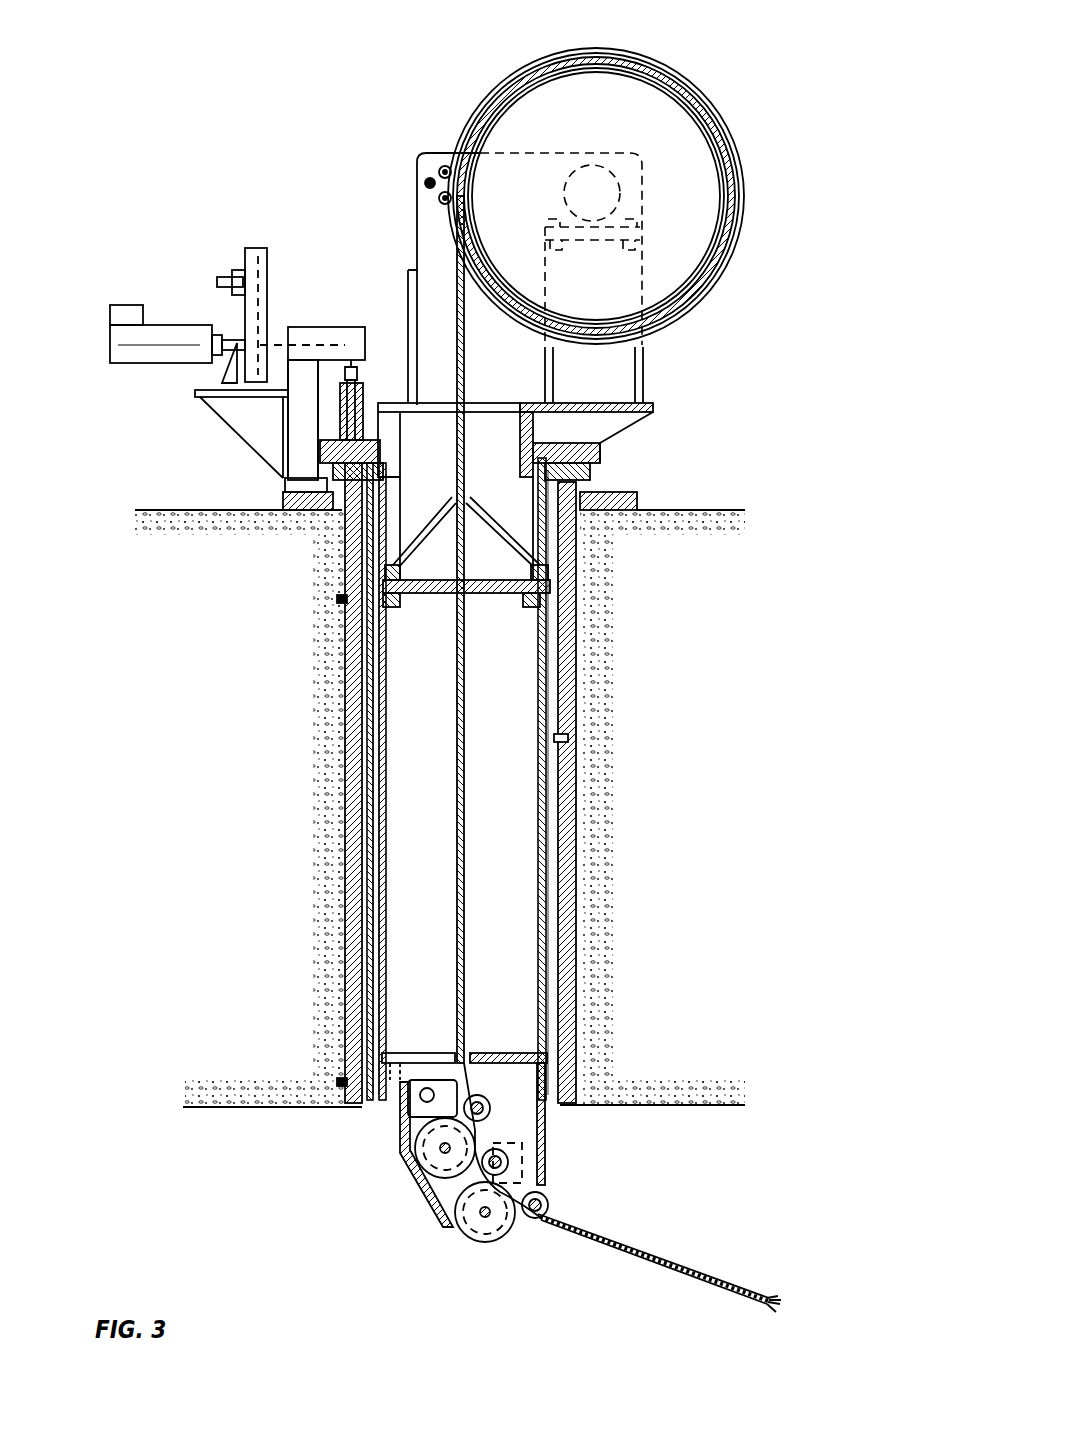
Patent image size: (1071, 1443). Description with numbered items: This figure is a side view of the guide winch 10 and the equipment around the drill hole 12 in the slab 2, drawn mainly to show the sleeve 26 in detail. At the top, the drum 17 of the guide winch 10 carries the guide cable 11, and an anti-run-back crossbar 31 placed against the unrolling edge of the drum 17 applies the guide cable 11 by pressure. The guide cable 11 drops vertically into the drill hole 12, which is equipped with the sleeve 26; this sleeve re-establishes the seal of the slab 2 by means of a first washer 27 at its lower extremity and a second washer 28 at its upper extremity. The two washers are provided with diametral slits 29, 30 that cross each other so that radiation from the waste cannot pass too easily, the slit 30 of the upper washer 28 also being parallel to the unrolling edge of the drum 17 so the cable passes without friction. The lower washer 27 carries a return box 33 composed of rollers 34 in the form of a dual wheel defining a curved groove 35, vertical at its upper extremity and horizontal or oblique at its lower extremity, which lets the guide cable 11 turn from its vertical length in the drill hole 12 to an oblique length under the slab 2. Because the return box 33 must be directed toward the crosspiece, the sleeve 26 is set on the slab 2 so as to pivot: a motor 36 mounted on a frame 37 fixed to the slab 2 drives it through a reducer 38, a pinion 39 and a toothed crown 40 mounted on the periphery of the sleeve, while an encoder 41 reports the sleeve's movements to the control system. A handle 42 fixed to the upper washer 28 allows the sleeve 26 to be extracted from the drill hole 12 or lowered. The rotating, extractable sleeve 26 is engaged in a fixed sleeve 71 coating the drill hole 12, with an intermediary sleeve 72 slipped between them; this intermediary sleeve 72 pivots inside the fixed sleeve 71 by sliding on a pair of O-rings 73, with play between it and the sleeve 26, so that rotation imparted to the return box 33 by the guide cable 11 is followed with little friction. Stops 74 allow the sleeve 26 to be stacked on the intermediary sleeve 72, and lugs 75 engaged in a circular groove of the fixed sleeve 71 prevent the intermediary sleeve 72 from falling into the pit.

The slab 2 is at (218, 1107).
The guide winch 10 is at (455, 98).
The guide cable 11 is at (457, 292).
The drill hole 12 is at (347, 850).
The drum 17 is at (697, 92).
The sleeve 26 is at (535, 703).
The first washer 27 is at (492, 1053).
The second washer 28 is at (428, 597).
The diametral slit 29 is at (430, 1053).
The diametral slit 30 is at (470, 595).
The crossbar 31 is at (438, 178).
The return box 33 is at (470, 1244).
The rollers 34 is at (490, 1112).
The groove 35 is at (397, 1112).
The motor 36 is at (138, 352).
The frame 37 is at (246, 418).
The reducer 38 is at (248, 252).
The pinion 39 is at (328, 333).
The toothed crown 40 is at (365, 388).
The encoder 41 is at (218, 282).
The handle 42 is at (520, 530).
The fixed sleeve 71 is at (347, 728).
The intermediary sleeve 72 is at (570, 827).
The O-rings 73 is at (330, 620).
The stops 74 is at (348, 595).
The lugs 75 is at (568, 738).